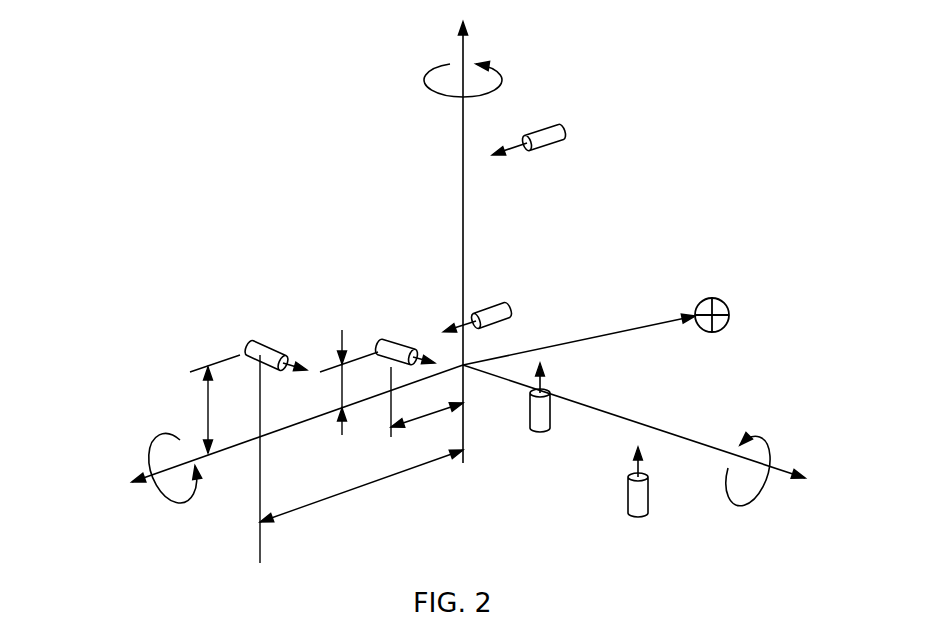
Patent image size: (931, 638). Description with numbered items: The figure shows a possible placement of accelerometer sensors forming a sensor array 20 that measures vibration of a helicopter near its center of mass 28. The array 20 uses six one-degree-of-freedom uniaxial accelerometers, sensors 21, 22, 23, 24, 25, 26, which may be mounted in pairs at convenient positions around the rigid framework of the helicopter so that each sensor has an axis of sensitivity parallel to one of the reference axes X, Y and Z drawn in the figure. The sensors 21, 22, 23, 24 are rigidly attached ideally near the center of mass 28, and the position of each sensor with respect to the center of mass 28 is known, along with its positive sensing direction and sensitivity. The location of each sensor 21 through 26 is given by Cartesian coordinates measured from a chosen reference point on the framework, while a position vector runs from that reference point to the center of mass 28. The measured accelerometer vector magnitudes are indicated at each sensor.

The sensor array 20 is at (700, 112).
The sensor 21 is at (250, 341).
The sensor 22 is at (400, 345).
The sensor 23 is at (628, 497).
The sensor 24 is at (548, 393).
The sensor 25 is at (552, 147).
The sensor 26 is at (476, 312).
The center of mass 28 is at (723, 300).